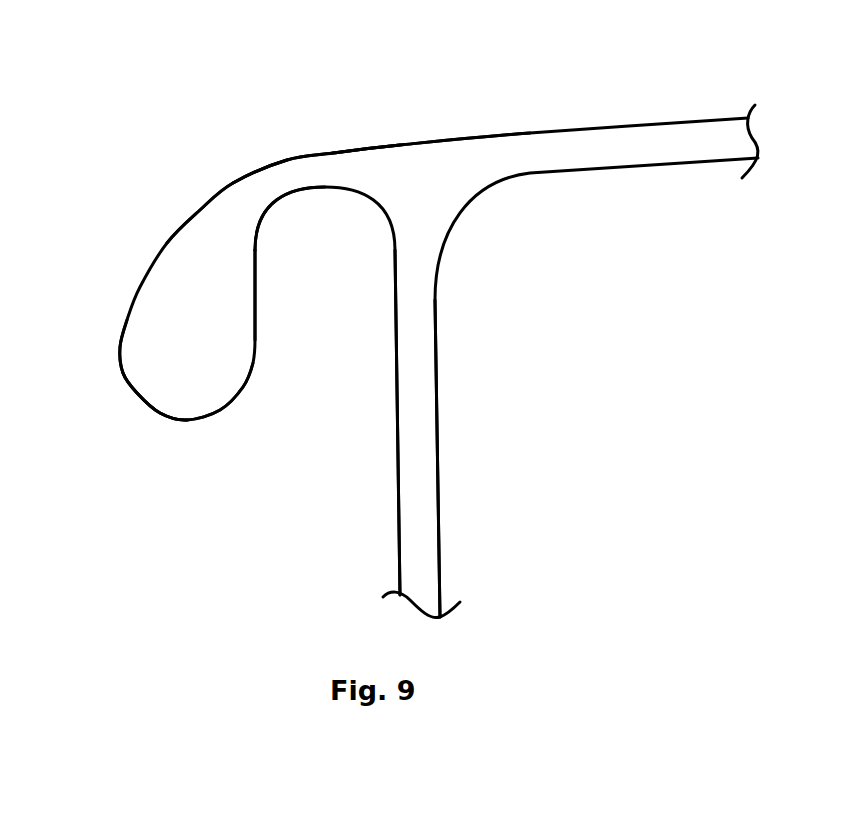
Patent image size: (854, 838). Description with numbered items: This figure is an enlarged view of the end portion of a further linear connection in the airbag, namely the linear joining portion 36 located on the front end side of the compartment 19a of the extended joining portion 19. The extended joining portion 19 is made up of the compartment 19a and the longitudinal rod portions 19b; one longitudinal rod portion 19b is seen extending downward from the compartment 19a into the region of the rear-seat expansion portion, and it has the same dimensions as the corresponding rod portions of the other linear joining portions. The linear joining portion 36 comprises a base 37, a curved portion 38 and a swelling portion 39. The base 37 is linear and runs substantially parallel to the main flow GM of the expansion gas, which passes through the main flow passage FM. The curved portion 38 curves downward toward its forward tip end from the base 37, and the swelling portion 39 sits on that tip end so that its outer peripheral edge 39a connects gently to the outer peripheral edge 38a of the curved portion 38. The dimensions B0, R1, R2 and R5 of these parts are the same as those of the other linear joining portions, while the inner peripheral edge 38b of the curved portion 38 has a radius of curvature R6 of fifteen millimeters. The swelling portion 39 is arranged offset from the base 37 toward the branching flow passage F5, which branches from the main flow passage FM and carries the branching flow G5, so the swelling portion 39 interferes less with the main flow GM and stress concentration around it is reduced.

The extended joining portion 19 is at (439, 361).
The compartment 19a is at (674, 152).
The longitudinal rod portion 19b is at (425, 495).
The linear joining portion 36 is at (316, 103).
The base 37 is at (365, 160).
The curved portion 38 is at (237, 183).
The outer peripheral edge of the curved portion 38a is at (247, 203).
The inner peripheral edge of the curved portion 38b is at (257, 253).
The swelling portion 39 is at (212, 390).
The outer peripheral edge of the swelling portion 39a is at (128, 387).
The dimension B0 is at (310, 206).
The radius R1 is at (229, 209).
The radius R2 is at (184, 404).
The radius R5 is at (371, 222).
The radius of curvature R6 is at (276, 238).
The main flow passage FM is at (478, 97).
The main flow of the expansion gas GM is at (560, 103).
The branching flow G5 is at (75, 245).
The branching flow passage F5 is at (80, 357).